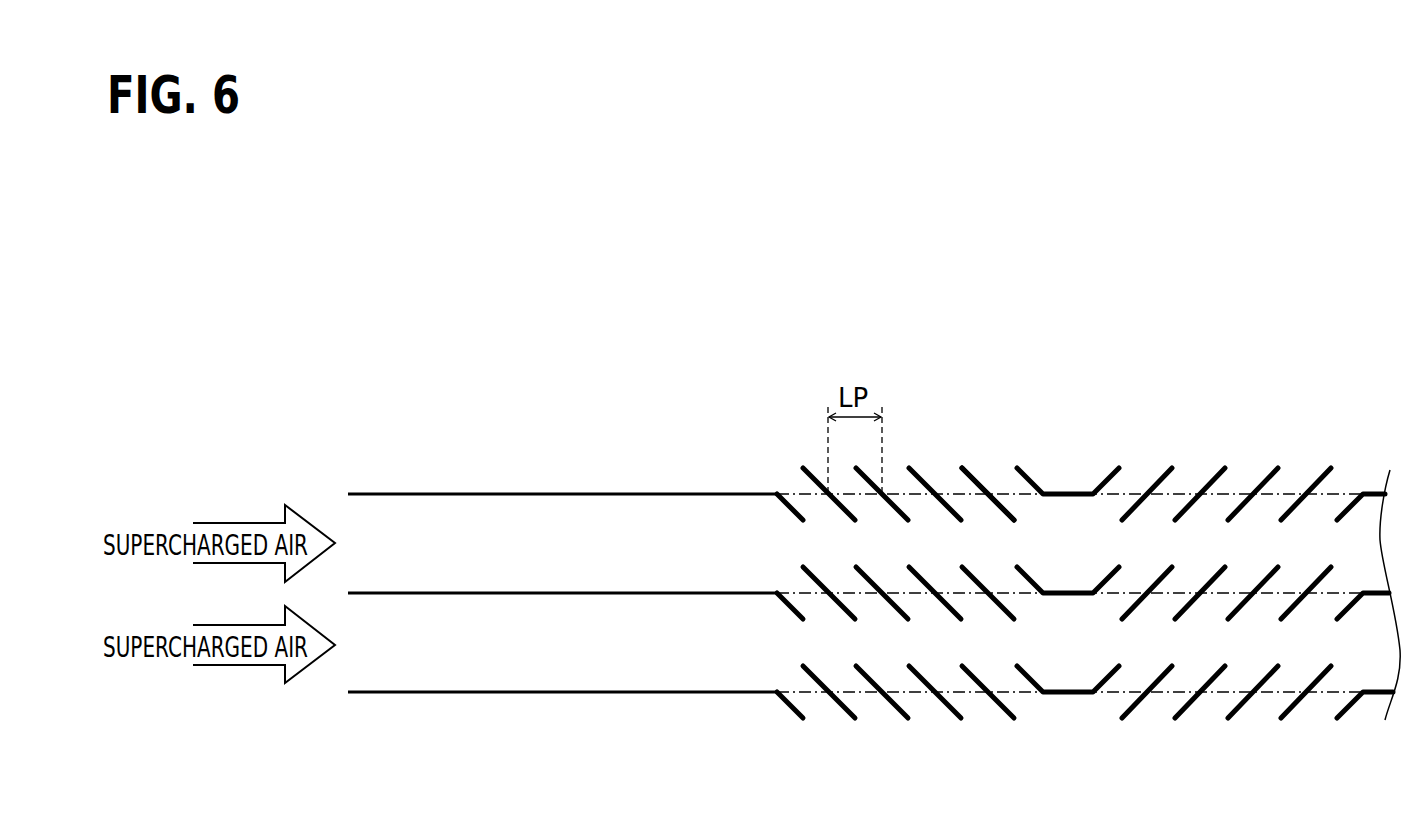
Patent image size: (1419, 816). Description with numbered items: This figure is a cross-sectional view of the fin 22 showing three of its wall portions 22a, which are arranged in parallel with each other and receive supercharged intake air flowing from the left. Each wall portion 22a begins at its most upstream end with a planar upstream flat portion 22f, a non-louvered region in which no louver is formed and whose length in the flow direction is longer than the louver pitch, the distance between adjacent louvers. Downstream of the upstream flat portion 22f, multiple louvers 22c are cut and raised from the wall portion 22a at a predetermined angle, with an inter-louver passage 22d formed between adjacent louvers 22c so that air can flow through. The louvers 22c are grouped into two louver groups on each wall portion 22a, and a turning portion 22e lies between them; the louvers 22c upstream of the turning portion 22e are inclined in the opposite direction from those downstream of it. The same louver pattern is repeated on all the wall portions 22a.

The fin 22 is at (1085, 528).
The wall portion 22a is at (1222, 445).
The louver 22c is at (980, 483).
The inter-louver passage 22d is at (947, 480).
The turning portion 22e is at (1065, 494).
The upstream flat portion 22f is at (503, 493).